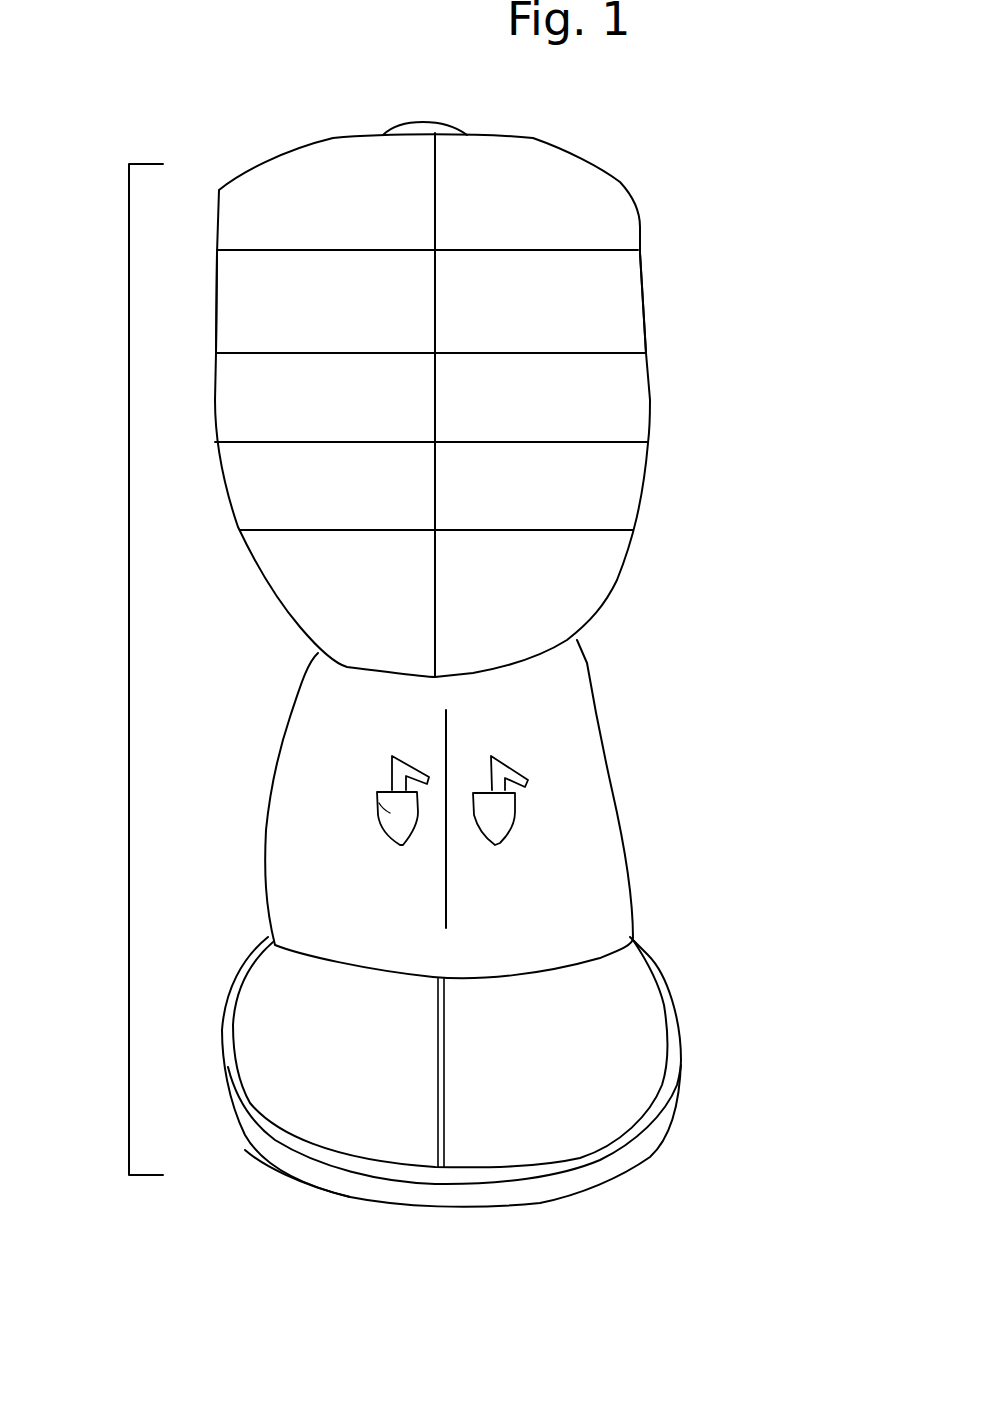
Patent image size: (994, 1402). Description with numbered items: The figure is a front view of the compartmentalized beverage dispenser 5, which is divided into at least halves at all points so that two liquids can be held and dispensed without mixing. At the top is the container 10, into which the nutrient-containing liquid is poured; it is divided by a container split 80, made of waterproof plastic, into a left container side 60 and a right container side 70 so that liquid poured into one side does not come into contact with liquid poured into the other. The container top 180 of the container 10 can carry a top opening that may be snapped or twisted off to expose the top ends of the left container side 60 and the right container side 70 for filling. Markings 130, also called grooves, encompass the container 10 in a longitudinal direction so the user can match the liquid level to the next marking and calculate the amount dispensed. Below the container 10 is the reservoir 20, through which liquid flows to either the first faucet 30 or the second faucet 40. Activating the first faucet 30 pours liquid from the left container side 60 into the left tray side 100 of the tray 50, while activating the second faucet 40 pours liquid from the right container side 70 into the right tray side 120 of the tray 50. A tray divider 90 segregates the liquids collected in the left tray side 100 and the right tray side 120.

The compartmentalized beverage dispenser 5 is at (129, 533).
The container 10 is at (617, 180).
The reservoir 20 is at (597, 697).
The first faucet 30 is at (387, 810).
The second faucet 40 is at (515, 808).
The tray 50 is at (578, 1182).
The left container side 60 is at (217, 290).
The right container side 70 is at (644, 288).
The container split 80 is at (437, 160).
The tray divider 90 is at (445, 1047).
The left tray side 100 is at (303, 1097).
The right tray side 120 is at (623, 1077).
The markings 130 is at (647, 357).
The container top 180 is at (397, 125).